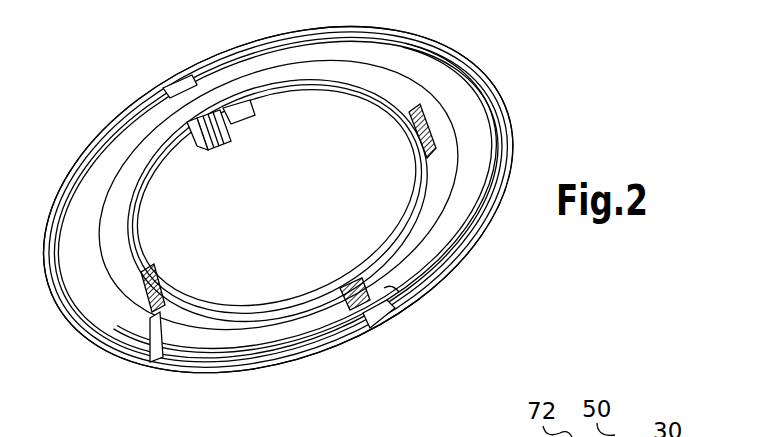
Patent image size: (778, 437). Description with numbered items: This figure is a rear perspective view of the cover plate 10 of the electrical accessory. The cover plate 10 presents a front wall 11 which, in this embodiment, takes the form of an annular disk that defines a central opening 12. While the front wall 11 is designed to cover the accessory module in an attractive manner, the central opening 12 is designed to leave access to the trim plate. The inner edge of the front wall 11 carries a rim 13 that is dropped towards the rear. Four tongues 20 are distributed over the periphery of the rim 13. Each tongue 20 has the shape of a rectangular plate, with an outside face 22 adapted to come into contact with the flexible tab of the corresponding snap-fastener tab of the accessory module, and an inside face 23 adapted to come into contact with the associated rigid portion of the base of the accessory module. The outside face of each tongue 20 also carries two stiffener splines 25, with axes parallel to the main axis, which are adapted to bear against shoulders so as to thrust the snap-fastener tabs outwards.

The cover plate 10 is at (505, 95).
The front wall 11 is at (508, 144).
The central opening 12 is at (356, 130).
The rim 13 is at (143, 208).
The tongue 20 is at (248, 127).
The outside face 22 is at (207, 150).
The inside face 23 is at (165, 280).
The stiffener spline 25 is at (177, 143).